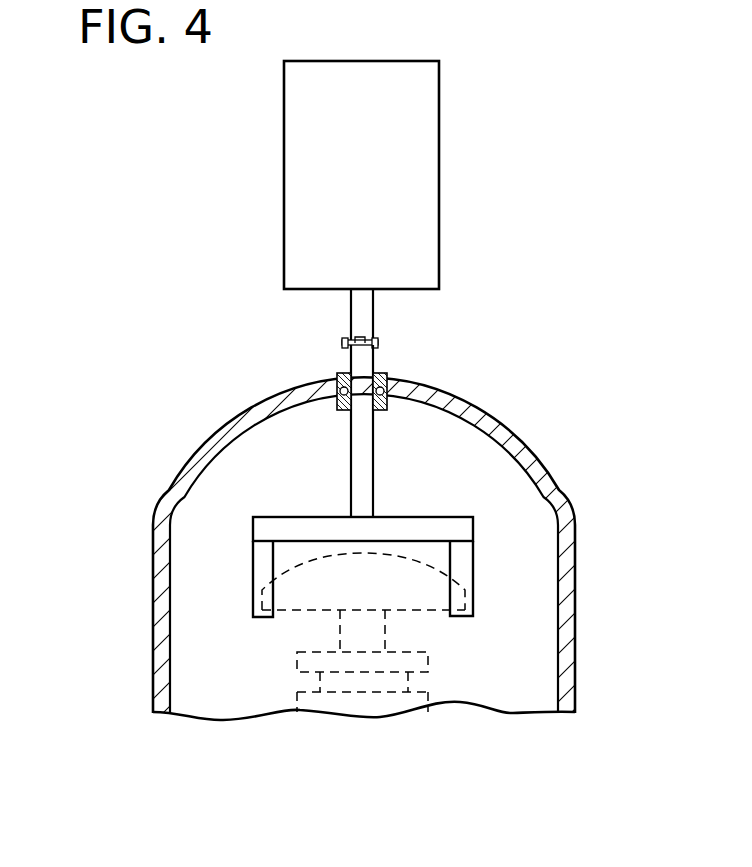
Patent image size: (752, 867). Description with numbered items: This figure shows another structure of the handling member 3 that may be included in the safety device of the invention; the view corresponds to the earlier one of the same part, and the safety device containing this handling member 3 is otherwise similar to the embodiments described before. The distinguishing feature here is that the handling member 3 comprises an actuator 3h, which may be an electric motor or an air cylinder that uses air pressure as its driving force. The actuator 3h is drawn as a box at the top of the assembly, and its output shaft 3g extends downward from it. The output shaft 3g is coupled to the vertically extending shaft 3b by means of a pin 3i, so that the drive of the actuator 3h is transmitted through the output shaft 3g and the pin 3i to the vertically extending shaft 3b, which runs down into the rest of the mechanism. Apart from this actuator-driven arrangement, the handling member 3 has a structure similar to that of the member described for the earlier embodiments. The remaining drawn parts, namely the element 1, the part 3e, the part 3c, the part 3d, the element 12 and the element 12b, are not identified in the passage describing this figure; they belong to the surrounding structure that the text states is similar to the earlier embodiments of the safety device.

The vacuum chamber (bell jar) 1 is at (520, 437).
The handling member 3 is at (473, 362).
The actuator 3h is at (293, 178).
The output shaft 3g is at (360, 330).
The pin 3i is at (378, 343).
The bearing 3e is at (340, 398).
The vertically extending shaft 3b is at (354, 467).
The rotary table 3c is at (293, 527).
The holder legs 3d is at (258, 553).
The substrate holder 12 is at (450, 647).
The substrate 12b is at (317, 600).